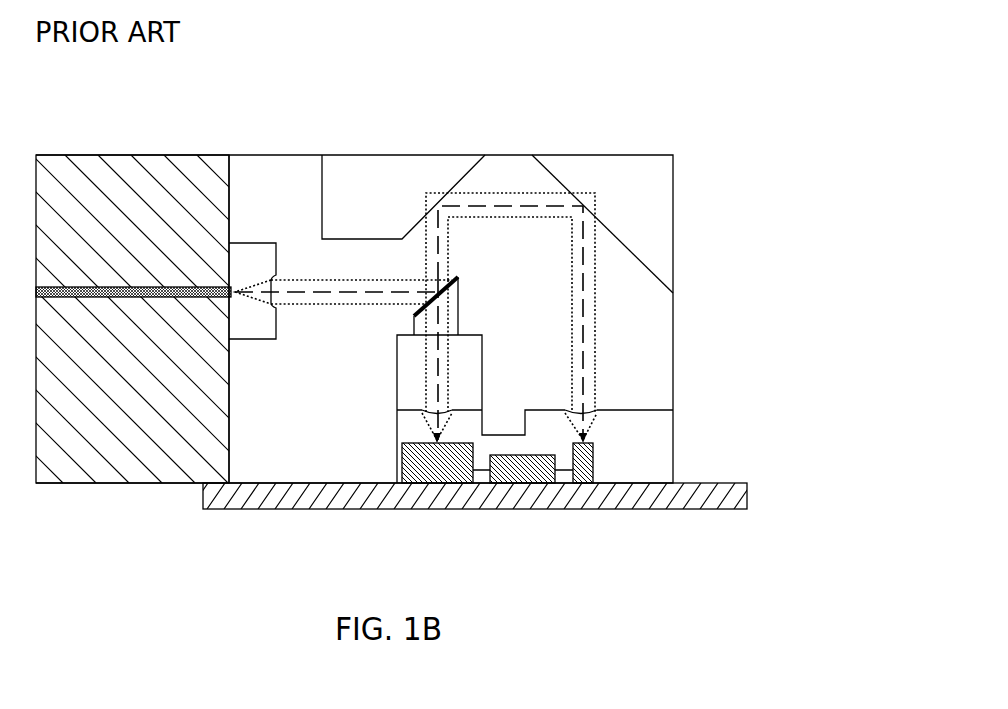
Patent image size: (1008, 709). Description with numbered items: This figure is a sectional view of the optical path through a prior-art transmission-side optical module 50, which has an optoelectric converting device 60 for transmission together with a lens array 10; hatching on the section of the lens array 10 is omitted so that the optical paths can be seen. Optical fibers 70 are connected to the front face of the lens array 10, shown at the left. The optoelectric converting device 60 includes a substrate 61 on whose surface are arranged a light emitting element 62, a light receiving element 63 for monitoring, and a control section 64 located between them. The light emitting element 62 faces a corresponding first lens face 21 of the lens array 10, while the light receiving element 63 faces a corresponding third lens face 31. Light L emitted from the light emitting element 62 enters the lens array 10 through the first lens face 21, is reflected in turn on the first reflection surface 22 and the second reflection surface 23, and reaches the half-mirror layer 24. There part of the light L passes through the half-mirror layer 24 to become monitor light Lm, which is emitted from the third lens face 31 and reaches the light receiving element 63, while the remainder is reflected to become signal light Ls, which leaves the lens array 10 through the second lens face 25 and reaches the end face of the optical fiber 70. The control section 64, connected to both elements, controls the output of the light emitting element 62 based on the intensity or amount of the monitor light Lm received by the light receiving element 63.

The optical module 50 is at (729, 70).
The lens array 10 is at (618, 148).
The first lens face 21 is at (597, 411).
The first reflection surface 22 is at (627, 247).
The second reflection surface 23 is at (448, 193).
The half-mirror layer 24 is at (458, 282).
The second lens face 25 is at (273, 277).
The third lens face 31 is at (423, 412).
The optoelectric converting device 60 is at (471, 494).
The substrate 61 is at (582, 505).
The light emitting element 62 is at (600, 467).
The light receiving element 63 is at (438, 483).
The control section 64 is at (527, 481).
The optical fiber 70 is at (128, 287).
The light L is at (597, 356).
The signal light Ls is at (343, 304).
The monitor light Lm is at (448, 368).